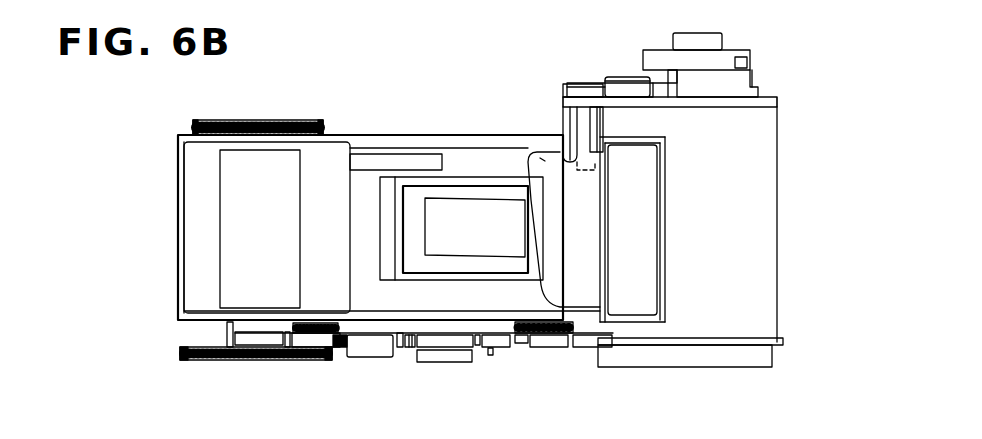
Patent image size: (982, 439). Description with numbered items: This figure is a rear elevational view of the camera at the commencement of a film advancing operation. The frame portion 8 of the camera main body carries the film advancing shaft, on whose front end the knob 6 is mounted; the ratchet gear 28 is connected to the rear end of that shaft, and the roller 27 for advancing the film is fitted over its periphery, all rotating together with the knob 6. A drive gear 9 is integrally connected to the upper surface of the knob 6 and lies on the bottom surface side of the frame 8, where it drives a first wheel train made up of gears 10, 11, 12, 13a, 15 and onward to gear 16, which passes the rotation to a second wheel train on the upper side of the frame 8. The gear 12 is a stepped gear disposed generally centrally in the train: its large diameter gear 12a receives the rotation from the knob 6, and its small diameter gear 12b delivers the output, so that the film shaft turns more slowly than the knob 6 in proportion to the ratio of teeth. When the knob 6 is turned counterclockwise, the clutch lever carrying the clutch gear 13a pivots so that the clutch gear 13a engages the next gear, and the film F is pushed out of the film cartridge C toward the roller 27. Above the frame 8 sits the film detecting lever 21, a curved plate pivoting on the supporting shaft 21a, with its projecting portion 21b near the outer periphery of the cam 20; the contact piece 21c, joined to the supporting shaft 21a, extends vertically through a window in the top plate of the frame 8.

The knob 6 is at (218, 362).
The frame portion 8 is at (386, 135).
The drive gear 9 is at (228, 332).
The gear 10 is at (337, 360).
The gear 11 is at (355, 355).
The stepped gear 12 is at (405, 357).
The first, large diameter gear 12a is at (430, 348).
The second, small diameter gear 12b is at (440, 342).
The clutch gear 13a is at (506, 346).
The gear 15 is at (547, 347).
The gear 16 is at (583, 347).
The cam 20 is at (733, 43).
The film detecting lever 21 is at (692, 75).
The supporting shaft 21a is at (628, 75).
The projecting portion 21b is at (748, 62).
The contact piece 21c is at (565, 128).
The roller 27 is at (217, 225).
The ratchet gear 28 is at (283, 118).
The film cartridge C is at (633, 297).
The film F is at (540, 158).